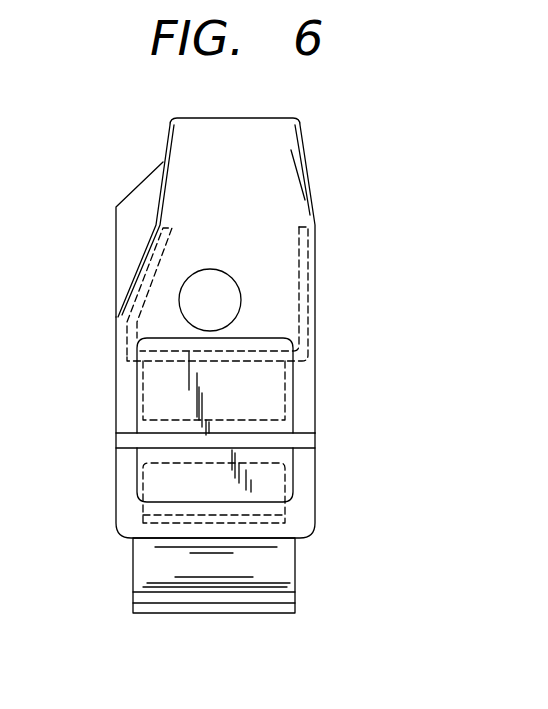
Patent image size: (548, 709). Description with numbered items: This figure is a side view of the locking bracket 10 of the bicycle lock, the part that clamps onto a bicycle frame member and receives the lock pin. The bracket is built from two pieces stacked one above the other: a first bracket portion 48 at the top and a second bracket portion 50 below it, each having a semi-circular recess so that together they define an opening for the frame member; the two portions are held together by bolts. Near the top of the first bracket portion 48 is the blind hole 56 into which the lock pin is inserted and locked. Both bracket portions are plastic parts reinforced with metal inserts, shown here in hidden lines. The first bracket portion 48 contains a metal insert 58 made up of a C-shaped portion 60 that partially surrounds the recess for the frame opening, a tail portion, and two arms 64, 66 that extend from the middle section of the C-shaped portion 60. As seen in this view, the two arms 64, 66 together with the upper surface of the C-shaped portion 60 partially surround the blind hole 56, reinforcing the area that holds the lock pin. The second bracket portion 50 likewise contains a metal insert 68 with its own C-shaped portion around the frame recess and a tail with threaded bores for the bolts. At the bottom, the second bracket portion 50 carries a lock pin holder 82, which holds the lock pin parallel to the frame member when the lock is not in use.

The locking bracket 10 is at (150, 157).
The first bracket portion 48 is at (282, 180).
The second bracket portion 50 is at (125, 507).
The blind hole 56 is at (193, 307).
The metal insert 58 is at (140, 390).
The C-shaped portion 60 is at (285, 383).
The arm 64 is at (148, 262).
The arm 66 is at (308, 288).
The metal insert 68 is at (275, 484).
The lock pin holder 82 is at (133, 578).